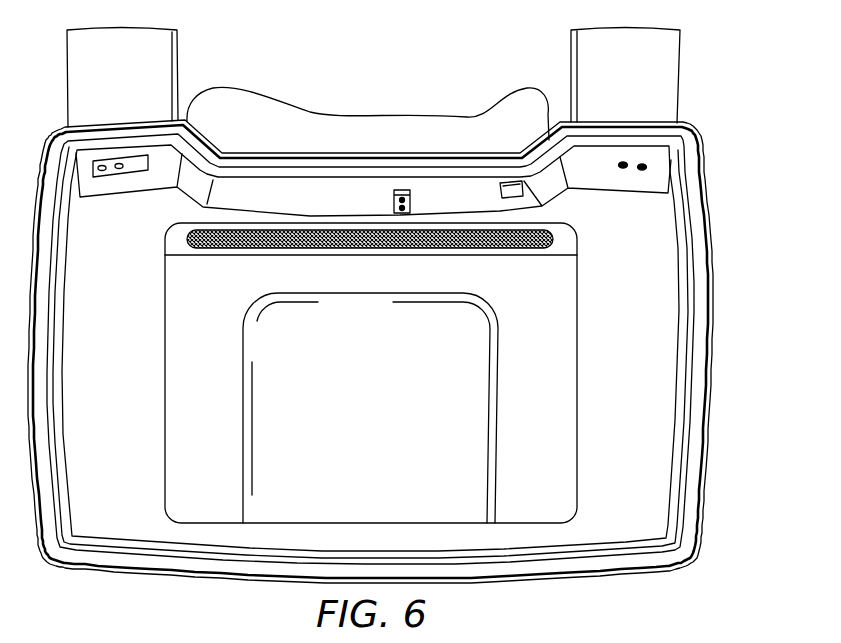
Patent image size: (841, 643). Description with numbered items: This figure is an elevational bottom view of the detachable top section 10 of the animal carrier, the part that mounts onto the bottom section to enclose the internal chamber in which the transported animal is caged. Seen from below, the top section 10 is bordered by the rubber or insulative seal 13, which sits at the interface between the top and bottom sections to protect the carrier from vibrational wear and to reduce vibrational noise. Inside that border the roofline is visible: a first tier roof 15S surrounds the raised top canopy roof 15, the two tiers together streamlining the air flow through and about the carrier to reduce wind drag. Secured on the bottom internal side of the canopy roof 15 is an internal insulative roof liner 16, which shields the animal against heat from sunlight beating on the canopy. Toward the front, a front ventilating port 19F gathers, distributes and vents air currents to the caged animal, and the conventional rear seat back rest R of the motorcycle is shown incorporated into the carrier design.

The rear seat back rest R is at (440, 112).
The top section 10 is at (716, 251).
The insulative seal 13 is at (684, 143).
The front ventilating port 19F is at (555, 240).
The canopy roof 15 is at (555, 387).
The first tier roof 15S is at (658, 432).
The insulative roof liner 16 is at (443, 502).